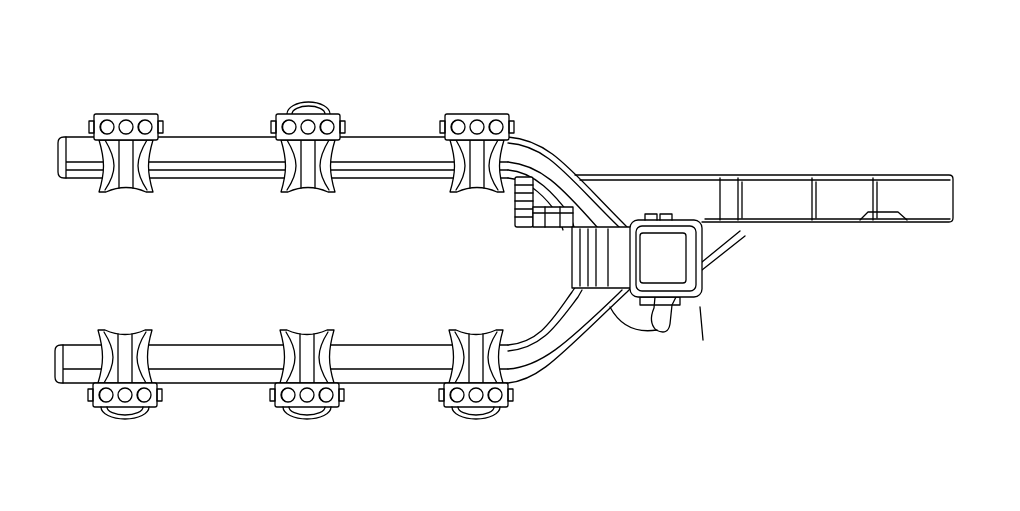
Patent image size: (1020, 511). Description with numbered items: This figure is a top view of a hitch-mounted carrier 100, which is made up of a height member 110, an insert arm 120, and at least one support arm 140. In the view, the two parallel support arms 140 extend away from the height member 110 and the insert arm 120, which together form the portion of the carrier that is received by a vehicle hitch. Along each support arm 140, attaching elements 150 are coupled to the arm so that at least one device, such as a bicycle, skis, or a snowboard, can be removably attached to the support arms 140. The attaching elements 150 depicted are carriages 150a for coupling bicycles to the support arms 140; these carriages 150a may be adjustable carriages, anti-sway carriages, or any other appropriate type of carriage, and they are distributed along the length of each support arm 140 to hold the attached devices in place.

The hitch-mounted carrier 100 is at (658, 67).
The height member 110 is at (688, 297).
The insert arm 120 is at (793, 167).
The support arm 140 is at (375, 182).
The attaching element 150 is at (287, 102).
The carriage 150a is at (277, 202).